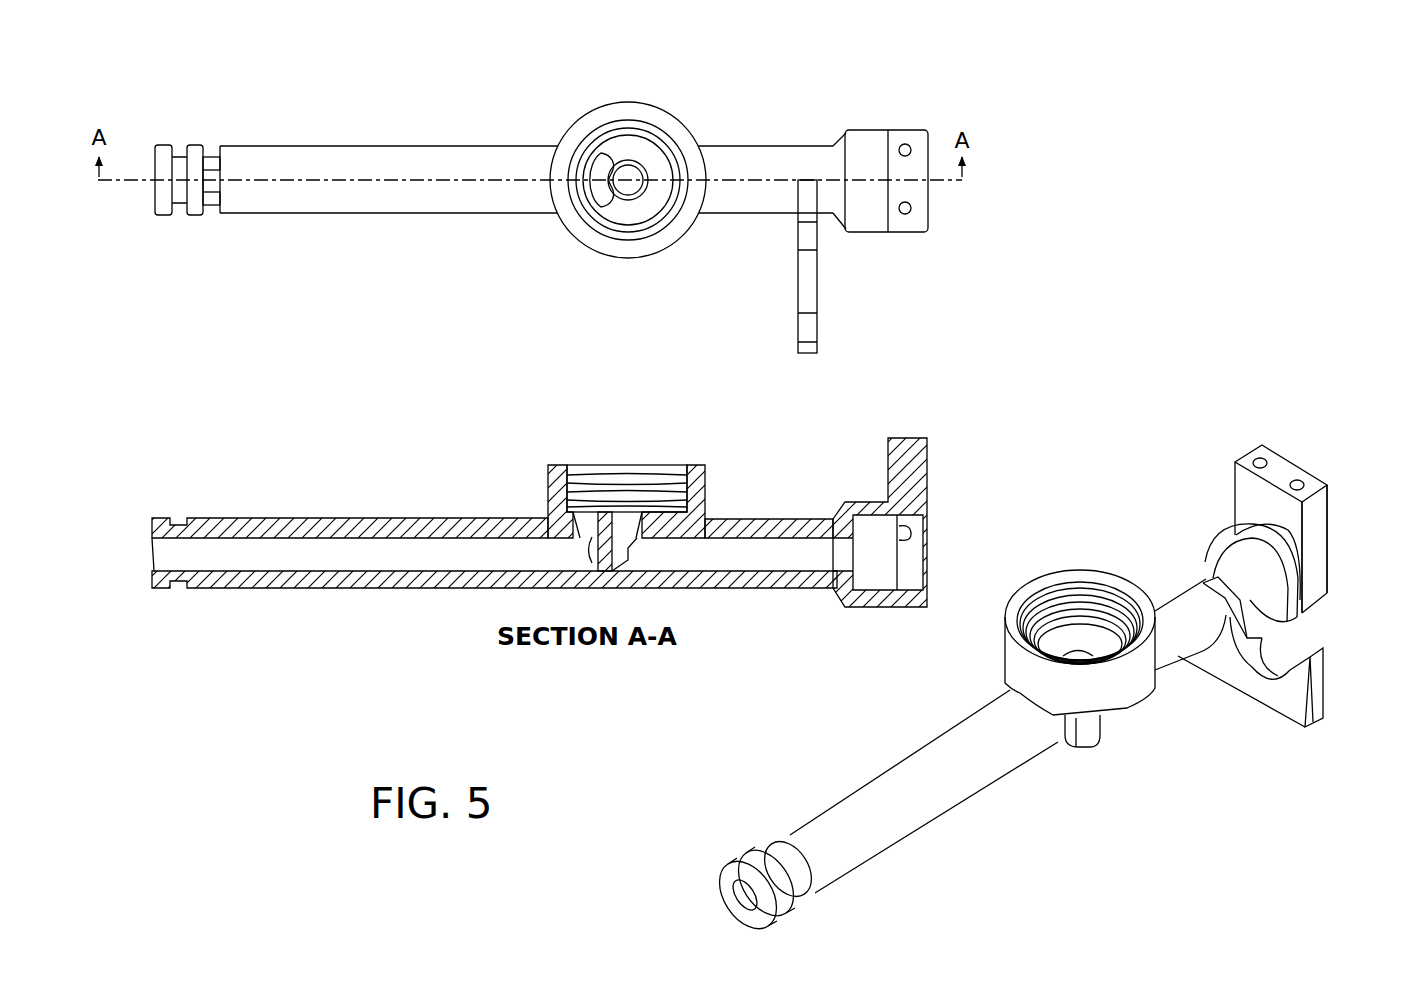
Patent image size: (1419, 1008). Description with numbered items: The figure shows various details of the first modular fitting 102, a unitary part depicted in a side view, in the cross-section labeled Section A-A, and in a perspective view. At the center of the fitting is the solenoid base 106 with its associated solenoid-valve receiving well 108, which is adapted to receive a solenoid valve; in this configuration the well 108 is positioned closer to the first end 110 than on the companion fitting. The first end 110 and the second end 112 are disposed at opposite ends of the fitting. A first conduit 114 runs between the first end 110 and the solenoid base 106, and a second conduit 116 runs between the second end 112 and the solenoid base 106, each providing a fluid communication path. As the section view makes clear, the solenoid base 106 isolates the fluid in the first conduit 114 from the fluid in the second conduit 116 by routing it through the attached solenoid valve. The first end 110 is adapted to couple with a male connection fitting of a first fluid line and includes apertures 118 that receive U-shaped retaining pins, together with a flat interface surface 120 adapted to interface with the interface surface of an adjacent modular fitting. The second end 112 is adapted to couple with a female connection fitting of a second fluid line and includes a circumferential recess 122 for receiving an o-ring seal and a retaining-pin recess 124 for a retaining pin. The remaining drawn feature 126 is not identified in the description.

The first modular fitting 102 is at (1240, 122).
The solenoid base 106 is at (632, 258).
The solenoid-valve receiving well 108 is at (578, 440).
The first end 110 is at (912, 102).
The second end 112 is at (183, 133).
The first conduit 114 is at (742, 145).
The second conduit 116 is at (410, 145).
The apertures 118 is at (910, 150).
The interface surface 120 is at (1322, 545).
The circumferential recess 122 is at (177, 214).
The retaining-pin recess 124 is at (207, 150).
The mounting plate 126 is at (1320, 697).